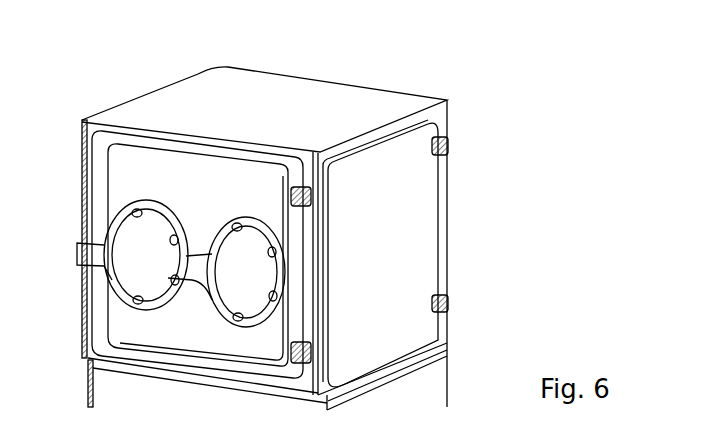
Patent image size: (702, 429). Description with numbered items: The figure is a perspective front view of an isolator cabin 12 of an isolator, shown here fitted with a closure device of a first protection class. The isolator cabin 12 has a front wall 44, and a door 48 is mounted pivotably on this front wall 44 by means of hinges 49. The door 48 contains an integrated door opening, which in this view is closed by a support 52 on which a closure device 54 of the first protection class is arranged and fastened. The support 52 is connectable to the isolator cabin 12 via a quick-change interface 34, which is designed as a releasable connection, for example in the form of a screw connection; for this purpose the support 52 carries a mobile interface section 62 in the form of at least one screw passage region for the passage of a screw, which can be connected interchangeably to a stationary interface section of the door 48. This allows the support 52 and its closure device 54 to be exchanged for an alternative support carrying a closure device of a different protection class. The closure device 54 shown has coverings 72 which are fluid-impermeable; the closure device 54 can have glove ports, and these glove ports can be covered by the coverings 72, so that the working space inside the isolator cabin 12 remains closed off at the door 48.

The isolator cabin 12 is at (484, 174).
The quick-change interface 34 is at (272, 125).
The front wall 44 is at (93, 137).
The door 48 is at (108, 142).
The hinges 49 is at (304, 172).
The support 52 is at (223, 177).
The closure device 54 is at (127, 267).
The mobile interface section 62 is at (127, 145).
The coverings 72 is at (134, 289).